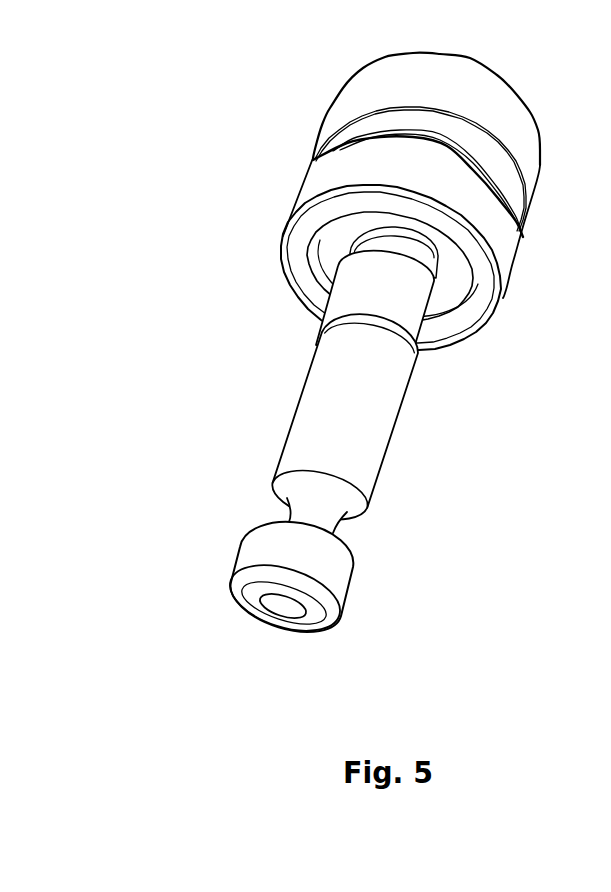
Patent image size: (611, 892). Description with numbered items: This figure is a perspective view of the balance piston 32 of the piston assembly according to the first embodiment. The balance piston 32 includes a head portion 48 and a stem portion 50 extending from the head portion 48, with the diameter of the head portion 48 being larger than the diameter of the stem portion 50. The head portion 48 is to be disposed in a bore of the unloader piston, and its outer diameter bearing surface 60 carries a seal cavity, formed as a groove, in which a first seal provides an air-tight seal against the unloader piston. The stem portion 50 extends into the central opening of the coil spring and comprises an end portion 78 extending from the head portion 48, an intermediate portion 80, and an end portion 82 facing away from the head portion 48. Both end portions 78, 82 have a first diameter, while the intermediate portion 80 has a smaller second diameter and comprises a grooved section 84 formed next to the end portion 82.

The balance piston 32 is at (365, 328).
The head portion 48 is at (343, 100).
The outer diameter bearing surface 60 is at (513, 257).
The stem portion 50 is at (297, 435).
The end portion 78 is at (345, 300).
The intermediate portion 80 is at (320, 387).
The grooved section 84 is at (300, 508).
The end portion 82 is at (264, 582).